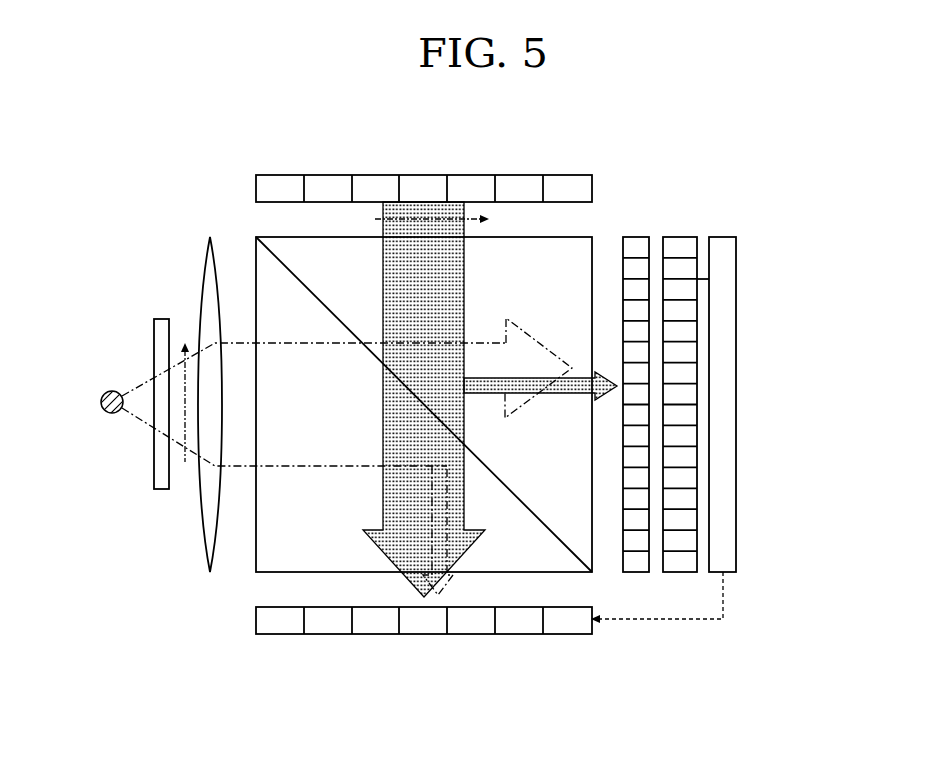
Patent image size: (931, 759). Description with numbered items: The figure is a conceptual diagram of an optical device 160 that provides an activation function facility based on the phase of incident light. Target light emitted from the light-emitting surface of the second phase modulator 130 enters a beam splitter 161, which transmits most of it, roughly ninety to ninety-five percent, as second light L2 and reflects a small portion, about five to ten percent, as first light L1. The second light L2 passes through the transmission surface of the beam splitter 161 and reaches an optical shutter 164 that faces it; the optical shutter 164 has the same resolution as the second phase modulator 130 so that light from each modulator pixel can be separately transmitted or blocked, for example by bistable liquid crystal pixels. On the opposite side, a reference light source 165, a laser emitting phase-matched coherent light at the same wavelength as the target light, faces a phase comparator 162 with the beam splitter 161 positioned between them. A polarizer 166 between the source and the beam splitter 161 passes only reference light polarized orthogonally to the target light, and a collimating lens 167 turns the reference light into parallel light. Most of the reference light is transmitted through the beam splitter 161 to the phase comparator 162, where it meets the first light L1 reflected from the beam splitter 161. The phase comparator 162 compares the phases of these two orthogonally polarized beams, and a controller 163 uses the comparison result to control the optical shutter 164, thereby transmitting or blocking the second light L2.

The second phase modulator 130 is at (565, 175).
The optical device 160 is at (697, 115).
The beam splitter 161 is at (280, 572).
The phase comparator 162 is at (697, 233).
The controller 163 is at (725, 237).
The optical shutter 164 is at (282, 634).
The reference light source 165 is at (111, 390).
The polarizer 166 is at (162, 330).
The collimating lens 167 is at (210, 237).
The first light L1 is at (617, 386).
The second light L2 is at (393, 545).